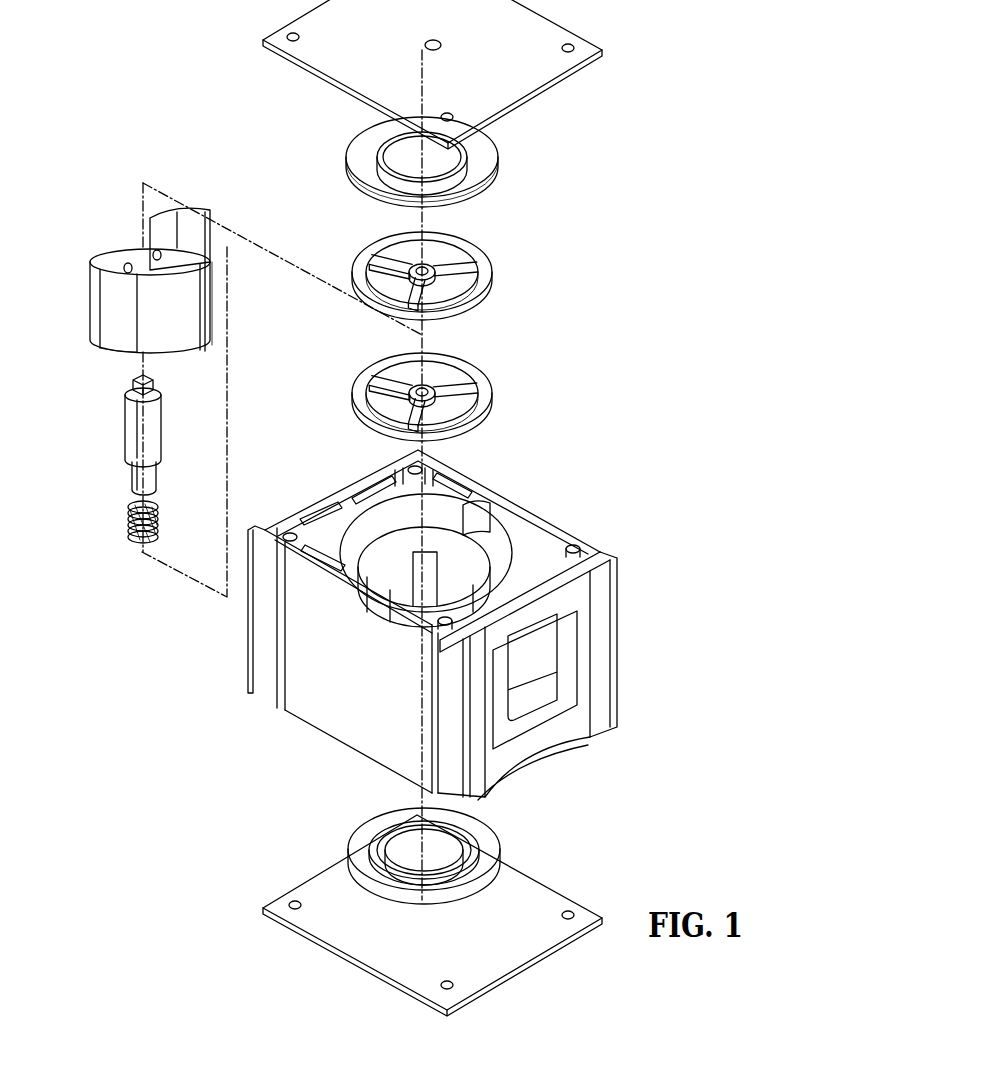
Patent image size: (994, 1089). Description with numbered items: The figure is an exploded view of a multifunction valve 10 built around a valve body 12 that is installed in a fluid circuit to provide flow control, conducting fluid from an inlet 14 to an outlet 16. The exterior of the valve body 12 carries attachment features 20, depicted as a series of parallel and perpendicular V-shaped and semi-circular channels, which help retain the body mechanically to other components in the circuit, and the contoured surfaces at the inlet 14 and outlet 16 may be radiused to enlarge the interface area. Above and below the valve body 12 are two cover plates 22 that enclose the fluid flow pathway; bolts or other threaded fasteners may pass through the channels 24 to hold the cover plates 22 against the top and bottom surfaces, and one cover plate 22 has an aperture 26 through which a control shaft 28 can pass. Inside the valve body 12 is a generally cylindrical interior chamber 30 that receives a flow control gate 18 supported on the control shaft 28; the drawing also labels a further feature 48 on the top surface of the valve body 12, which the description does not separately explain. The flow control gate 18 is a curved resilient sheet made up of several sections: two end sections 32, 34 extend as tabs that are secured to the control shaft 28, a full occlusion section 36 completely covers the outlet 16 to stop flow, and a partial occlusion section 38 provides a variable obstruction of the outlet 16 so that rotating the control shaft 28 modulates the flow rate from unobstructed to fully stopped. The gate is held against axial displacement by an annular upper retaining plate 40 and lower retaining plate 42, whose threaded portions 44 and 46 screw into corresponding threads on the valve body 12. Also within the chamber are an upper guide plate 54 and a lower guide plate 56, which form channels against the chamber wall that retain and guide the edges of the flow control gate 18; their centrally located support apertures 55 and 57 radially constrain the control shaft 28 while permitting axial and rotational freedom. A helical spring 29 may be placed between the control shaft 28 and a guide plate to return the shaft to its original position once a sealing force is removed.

The multifunction valve 10 is at (430, 620).
The valve body 12 is at (430, 620).
The inlet 14 is at (515, 735).
The outlet 16 is at (397, 545).
The flow control gate 18 is at (144, 280).
The attachment features 20 is at (378, 456).
The cover plates 22 is at (300, 72).
The channels 24 is at (425, 475).
The aperture 26 is at (436, 40).
The control shaft 28 is at (130, 430).
The helical spring 29 is at (128, 522).
The interior chamber 30 is at (500, 540).
The end section 32 is at (108, 258).
The end section 34 is at (162, 225).
The full occlusion section 36 is at (160, 330).
The partial occlusion section 38 is at (200, 285).
The upper retaining plate 40 is at (352, 170).
The lower retaining plate 42 is at (401, 836).
The threaded portion 44 is at (377, 199).
The threaded portion 46 is at (373, 823).
The boss 48 is at (470, 525).
The upper guide plate 54 is at (428, 262).
The support aperture 55 is at (412, 268).
The lower guide plate 56 is at (435, 381).
The support aperture 57 is at (412, 388).